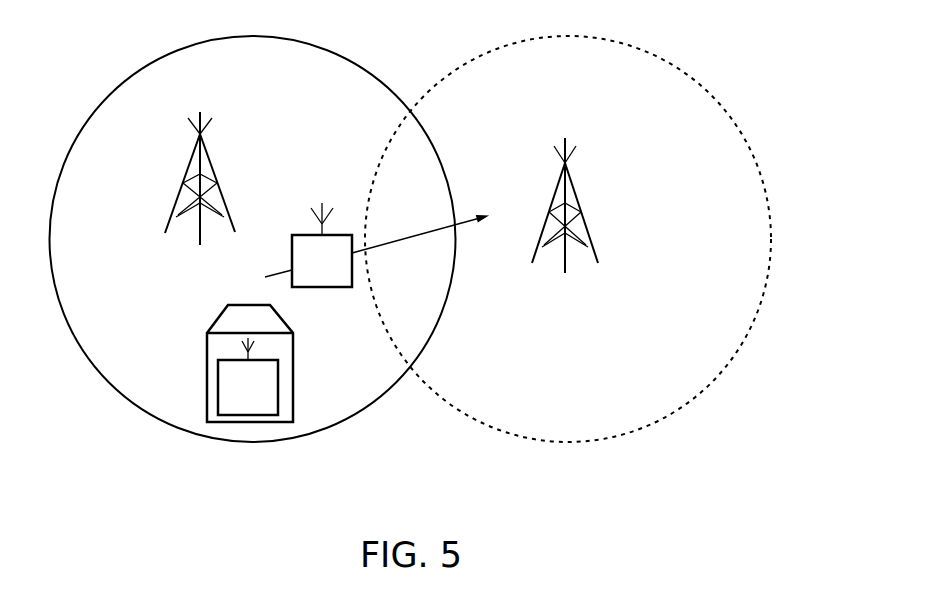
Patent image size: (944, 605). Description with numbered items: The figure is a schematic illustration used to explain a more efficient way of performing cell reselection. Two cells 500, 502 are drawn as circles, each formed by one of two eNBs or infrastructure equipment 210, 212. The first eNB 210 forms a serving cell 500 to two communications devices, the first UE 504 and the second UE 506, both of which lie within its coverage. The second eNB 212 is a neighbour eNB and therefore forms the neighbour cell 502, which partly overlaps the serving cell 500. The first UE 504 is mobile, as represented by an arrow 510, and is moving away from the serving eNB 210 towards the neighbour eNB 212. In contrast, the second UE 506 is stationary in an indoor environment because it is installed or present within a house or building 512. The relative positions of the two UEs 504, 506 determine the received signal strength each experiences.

The first eNB 210 is at (218, 192).
The second eNB 212 is at (590, 238).
The cell 500 is at (106, 382).
The neighbour cell 502 is at (713, 383).
The first UE 504 is at (326, 289).
The second UE 506 is at (245, 416).
The arrow 510 is at (412, 232).
The house or building 512 is at (207, 360).